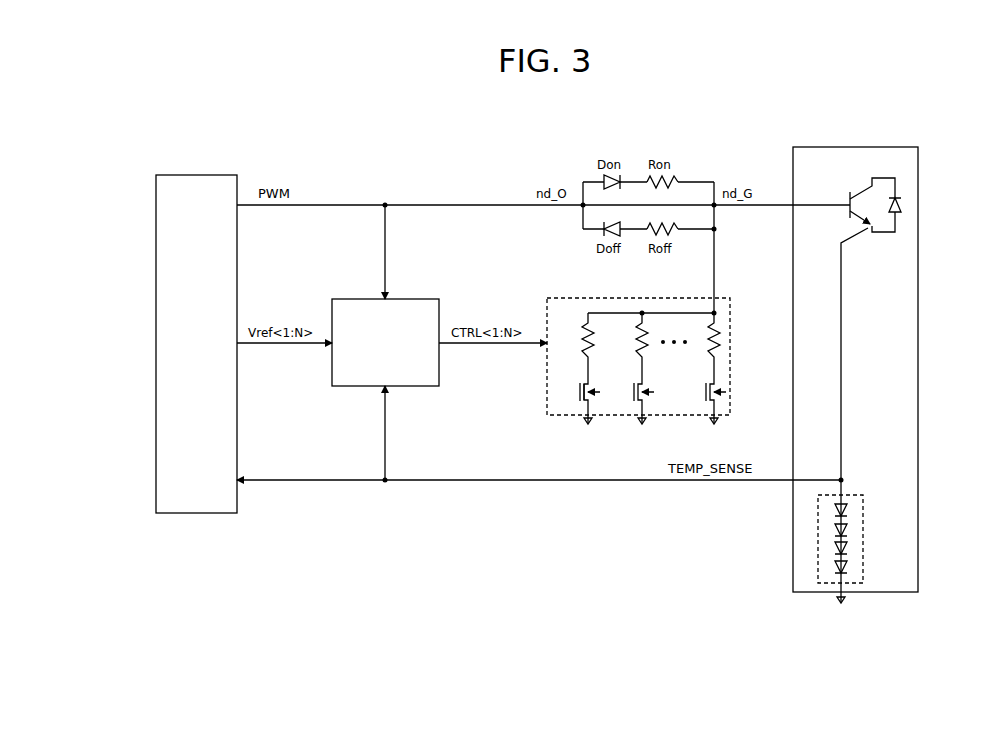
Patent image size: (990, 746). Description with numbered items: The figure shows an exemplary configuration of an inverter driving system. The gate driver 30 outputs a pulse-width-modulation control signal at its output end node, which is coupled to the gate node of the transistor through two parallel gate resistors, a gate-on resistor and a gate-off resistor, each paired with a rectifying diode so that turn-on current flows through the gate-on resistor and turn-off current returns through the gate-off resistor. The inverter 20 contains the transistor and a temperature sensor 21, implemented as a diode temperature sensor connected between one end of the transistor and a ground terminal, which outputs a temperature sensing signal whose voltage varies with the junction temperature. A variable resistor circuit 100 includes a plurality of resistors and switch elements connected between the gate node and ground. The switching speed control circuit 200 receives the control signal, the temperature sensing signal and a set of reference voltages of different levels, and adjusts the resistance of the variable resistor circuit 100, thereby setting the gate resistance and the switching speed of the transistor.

The gate driver 30 is at (203, 175).
The switching speed control circuit 200 is at (421, 299).
The variable resistor circuit 100 is at (562, 298).
The inverter 20 is at (882, 147).
The temperature sensor 21 is at (858, 493).